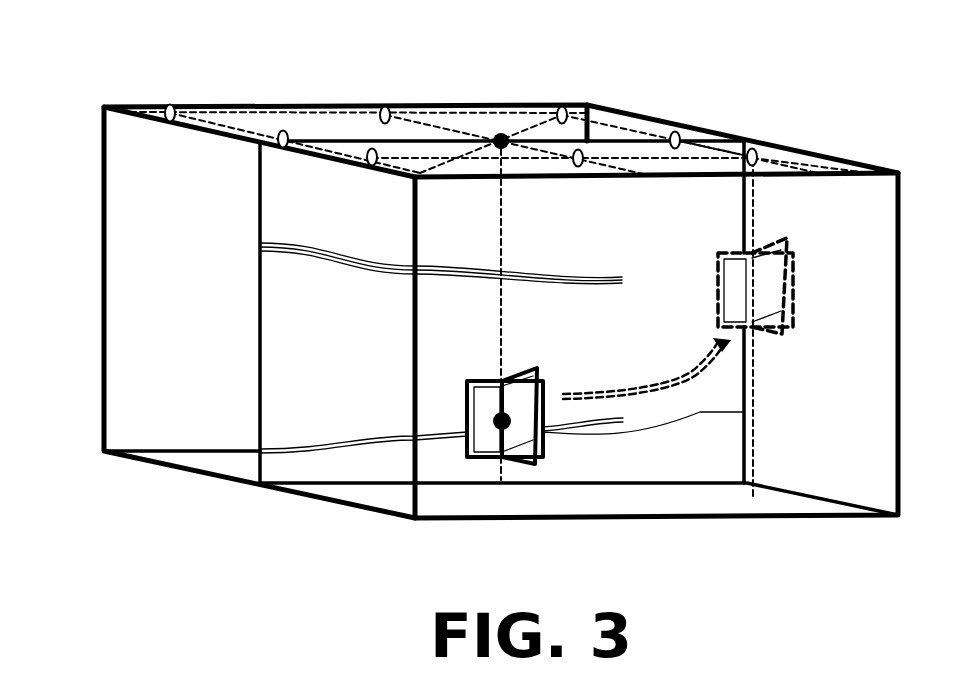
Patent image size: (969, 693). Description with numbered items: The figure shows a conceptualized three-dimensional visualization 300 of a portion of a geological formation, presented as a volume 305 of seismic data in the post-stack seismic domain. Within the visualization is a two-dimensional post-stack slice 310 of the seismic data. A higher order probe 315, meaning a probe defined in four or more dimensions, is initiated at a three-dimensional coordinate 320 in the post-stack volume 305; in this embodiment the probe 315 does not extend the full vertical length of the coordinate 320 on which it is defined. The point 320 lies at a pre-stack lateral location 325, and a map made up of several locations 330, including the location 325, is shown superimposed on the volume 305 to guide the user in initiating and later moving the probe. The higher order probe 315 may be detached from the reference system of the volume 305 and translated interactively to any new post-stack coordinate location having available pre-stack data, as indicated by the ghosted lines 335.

The three-dimensional visualization 300 is at (180, 26).
The volume of seismic data 305 is at (103, 107).
The post-stack slice 310 is at (260, 310).
The higher order probe 315 is at (538, 369).
The 3D coordinate 320 is at (500, 412).
The pre-stack lateral location 325 is at (508, 103).
The locations 330 is at (173, 106).
The ghosted lines 335 is at (690, 350).